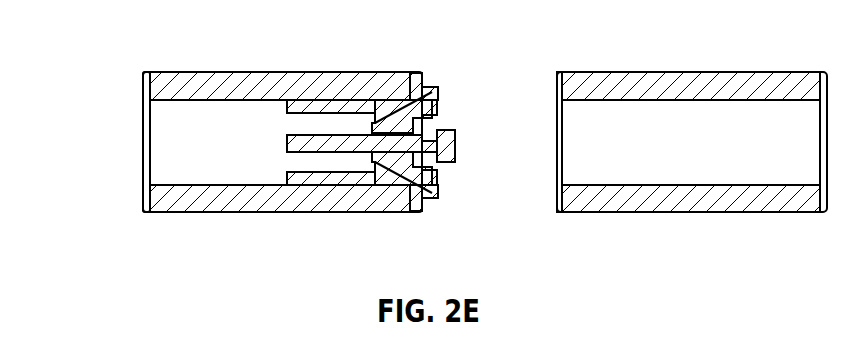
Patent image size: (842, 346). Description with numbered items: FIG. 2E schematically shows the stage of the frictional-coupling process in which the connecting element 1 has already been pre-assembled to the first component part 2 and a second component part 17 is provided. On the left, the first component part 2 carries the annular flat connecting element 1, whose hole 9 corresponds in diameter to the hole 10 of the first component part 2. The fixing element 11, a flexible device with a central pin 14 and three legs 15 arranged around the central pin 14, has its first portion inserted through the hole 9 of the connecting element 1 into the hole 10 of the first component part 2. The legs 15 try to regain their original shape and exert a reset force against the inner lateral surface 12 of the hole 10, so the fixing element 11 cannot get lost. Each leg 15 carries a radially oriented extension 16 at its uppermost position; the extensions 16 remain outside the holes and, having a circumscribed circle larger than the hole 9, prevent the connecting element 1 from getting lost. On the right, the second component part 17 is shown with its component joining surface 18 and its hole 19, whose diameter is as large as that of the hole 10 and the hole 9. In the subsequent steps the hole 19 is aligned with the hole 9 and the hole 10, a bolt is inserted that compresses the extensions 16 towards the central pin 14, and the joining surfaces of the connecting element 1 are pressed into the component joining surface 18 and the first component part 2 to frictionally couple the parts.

The connecting element 1 is at (417, 75).
The first component part 2 is at (182, 80).
The hole 9 is at (436, 122).
The hole 10 is at (146, 152).
The fixing element 11 is at (287, 140).
The inner lateral surface 12 is at (147, 112).
The central pin 14 is at (458, 142).
The legs 15 is at (318, 100).
The extensions 16 is at (440, 97).
The second component part 17 is at (710, 75).
The component joining surface 18 is at (557, 76).
The hole 19 is at (782, 112).